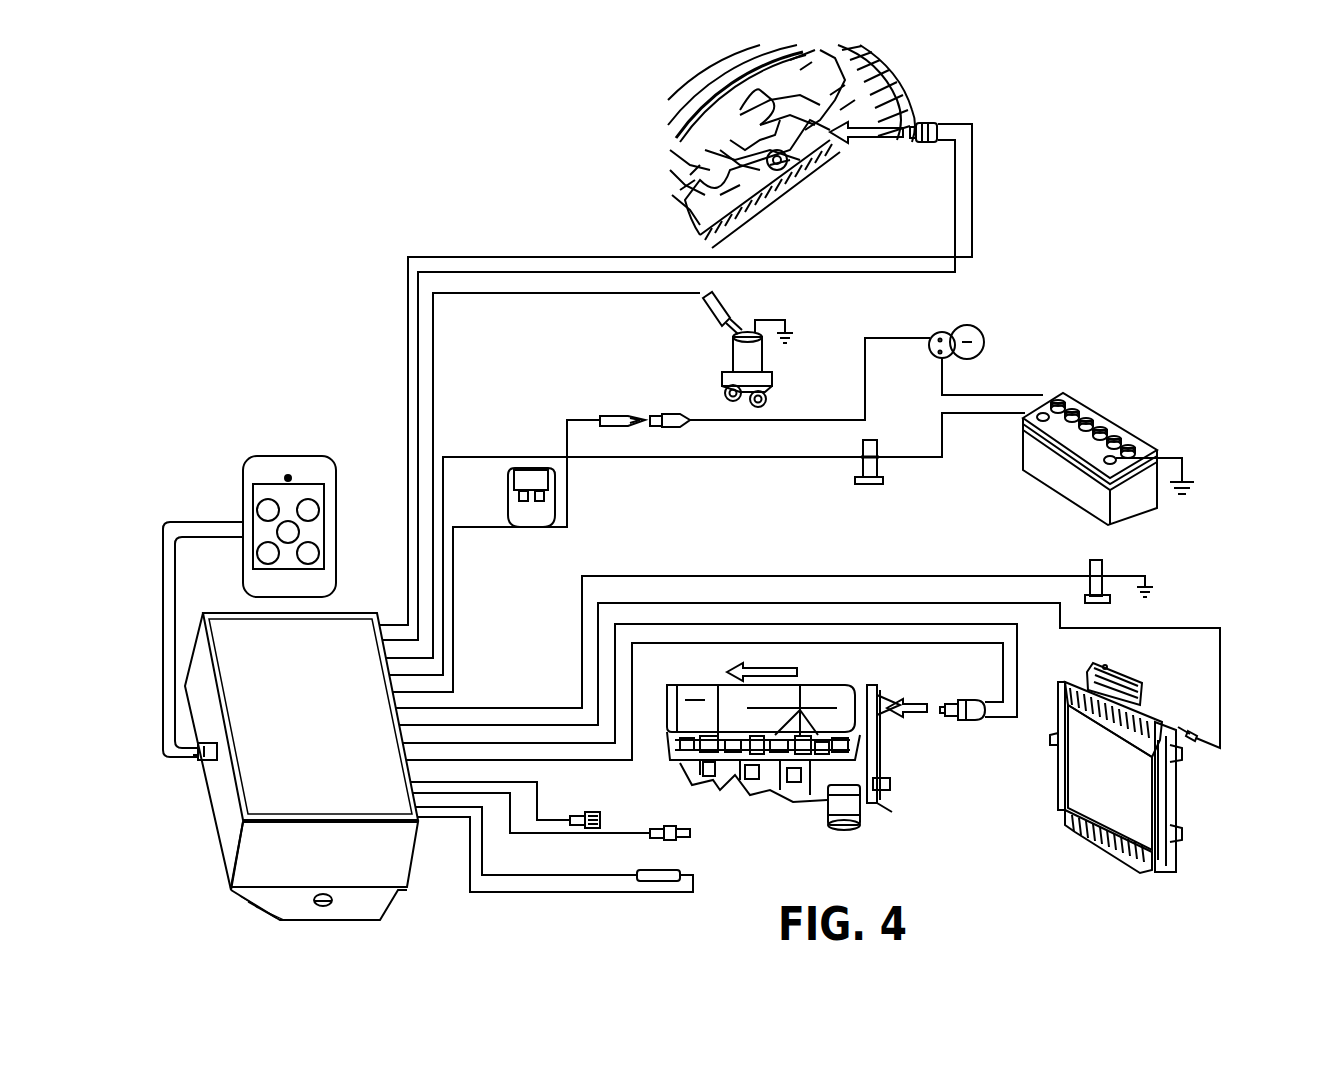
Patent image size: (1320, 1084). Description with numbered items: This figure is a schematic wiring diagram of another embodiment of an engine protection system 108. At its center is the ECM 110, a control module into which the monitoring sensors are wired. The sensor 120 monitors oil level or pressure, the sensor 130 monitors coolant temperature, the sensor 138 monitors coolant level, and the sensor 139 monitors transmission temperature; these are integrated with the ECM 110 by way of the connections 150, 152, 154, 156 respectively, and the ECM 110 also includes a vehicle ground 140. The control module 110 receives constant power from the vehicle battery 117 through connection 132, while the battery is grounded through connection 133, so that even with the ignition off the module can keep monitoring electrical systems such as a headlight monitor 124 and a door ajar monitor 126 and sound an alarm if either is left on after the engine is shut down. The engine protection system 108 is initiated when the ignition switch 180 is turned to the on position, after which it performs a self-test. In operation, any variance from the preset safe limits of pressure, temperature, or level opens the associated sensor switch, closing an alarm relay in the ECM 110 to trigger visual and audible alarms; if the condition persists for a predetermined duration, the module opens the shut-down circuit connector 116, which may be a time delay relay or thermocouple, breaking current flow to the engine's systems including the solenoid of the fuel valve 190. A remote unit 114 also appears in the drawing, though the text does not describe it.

The engine protection system 108 is at (385, 163).
The ECM 110 is at (208, 810).
The remote control 114 is at (287, 455).
The shut-down circuit connector 116 is at (622, 413).
The vehicle battery 117 is at (1110, 418).
The sensor 120 is at (960, 722).
The headlight monitor 124 is at (563, 820).
The door ajar monitor 126 is at (642, 832).
The sensor 130 is at (925, 118).
The connection 132 is at (972, 415).
The connection 133 is at (1184, 470).
The sensor 138 is at (1190, 742).
The sensor 139 is at (668, 870).
The vehicle ground 140 is at (1120, 577).
The connection 150 is at (1012, 722).
The connection 152 is at (975, 187).
The connection 154 is at (1223, 655).
The connection 156 is at (528, 876).
The ignition switch 180 is at (953, 332).
The fuel valve 190 is at (738, 352).